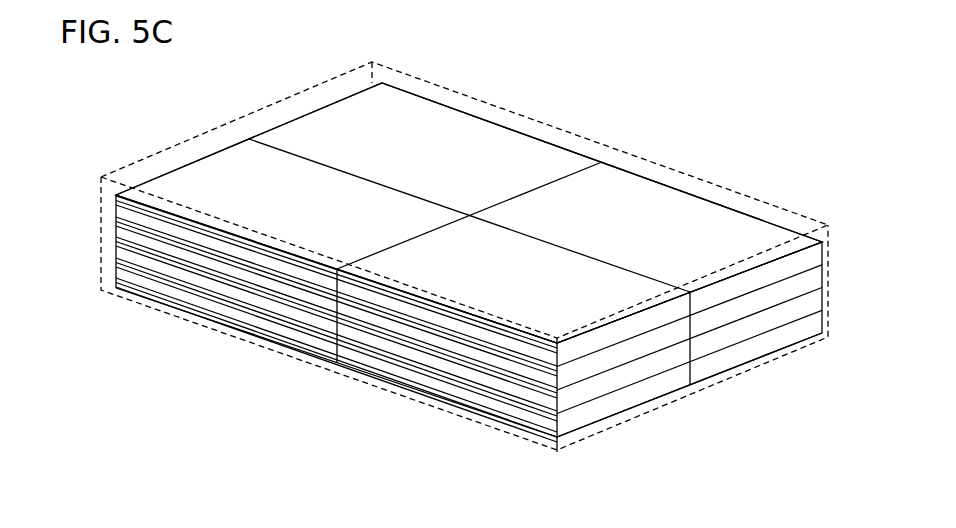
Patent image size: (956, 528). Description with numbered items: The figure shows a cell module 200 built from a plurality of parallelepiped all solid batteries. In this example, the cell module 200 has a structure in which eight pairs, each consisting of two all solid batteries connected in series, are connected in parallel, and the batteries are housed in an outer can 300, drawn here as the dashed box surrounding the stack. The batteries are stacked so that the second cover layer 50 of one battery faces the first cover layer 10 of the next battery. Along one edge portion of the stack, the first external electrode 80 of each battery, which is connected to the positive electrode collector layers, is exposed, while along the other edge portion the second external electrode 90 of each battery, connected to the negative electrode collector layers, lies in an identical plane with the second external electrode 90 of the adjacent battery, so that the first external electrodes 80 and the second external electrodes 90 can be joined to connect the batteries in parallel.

The first cover layer 10 is at (484, 418).
The second cover layer 50 is at (698, 208).
The first external electrode 80 is at (116, 247).
The second external electrode 90 is at (632, 400).
The cell module 200 is at (825, 95).
The outer can 300 is at (452, 88).